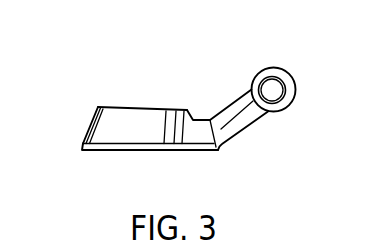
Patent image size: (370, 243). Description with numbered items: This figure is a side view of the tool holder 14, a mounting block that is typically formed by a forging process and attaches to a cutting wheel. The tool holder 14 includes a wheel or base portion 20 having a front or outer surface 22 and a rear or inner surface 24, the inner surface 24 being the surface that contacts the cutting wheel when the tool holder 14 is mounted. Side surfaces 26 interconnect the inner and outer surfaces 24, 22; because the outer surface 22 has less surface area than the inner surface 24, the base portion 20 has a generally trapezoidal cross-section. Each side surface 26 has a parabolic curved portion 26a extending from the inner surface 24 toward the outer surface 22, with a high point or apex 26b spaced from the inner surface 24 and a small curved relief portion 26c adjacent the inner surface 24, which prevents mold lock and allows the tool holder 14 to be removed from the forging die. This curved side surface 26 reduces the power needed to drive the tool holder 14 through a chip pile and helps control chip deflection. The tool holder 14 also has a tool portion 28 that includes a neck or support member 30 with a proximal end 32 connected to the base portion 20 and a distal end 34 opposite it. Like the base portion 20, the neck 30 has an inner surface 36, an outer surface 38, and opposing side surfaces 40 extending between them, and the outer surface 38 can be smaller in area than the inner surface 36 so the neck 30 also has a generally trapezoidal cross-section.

The tool holder 14 is at (122, 123).
The base portion 20 is at (108, 105).
The outer surface 22 is at (148, 93).
The inner surface 24 is at (152, 154).
The side surfaces 26 is at (83, 137).
The curved portion 26a is at (93, 115).
The apex 26b is at (82, 143).
The relief portion 26c is at (82, 150).
The tool portion 28 is at (270, 87).
The neck 30 is at (220, 152).
The proximal end 32 is at (197, 119).
The distal end 34 is at (302, 75).
The inner surface 36 is at (260, 122).
The outer surface 38 is at (226, 122).
The side surfaces 40 is at (239, 95).